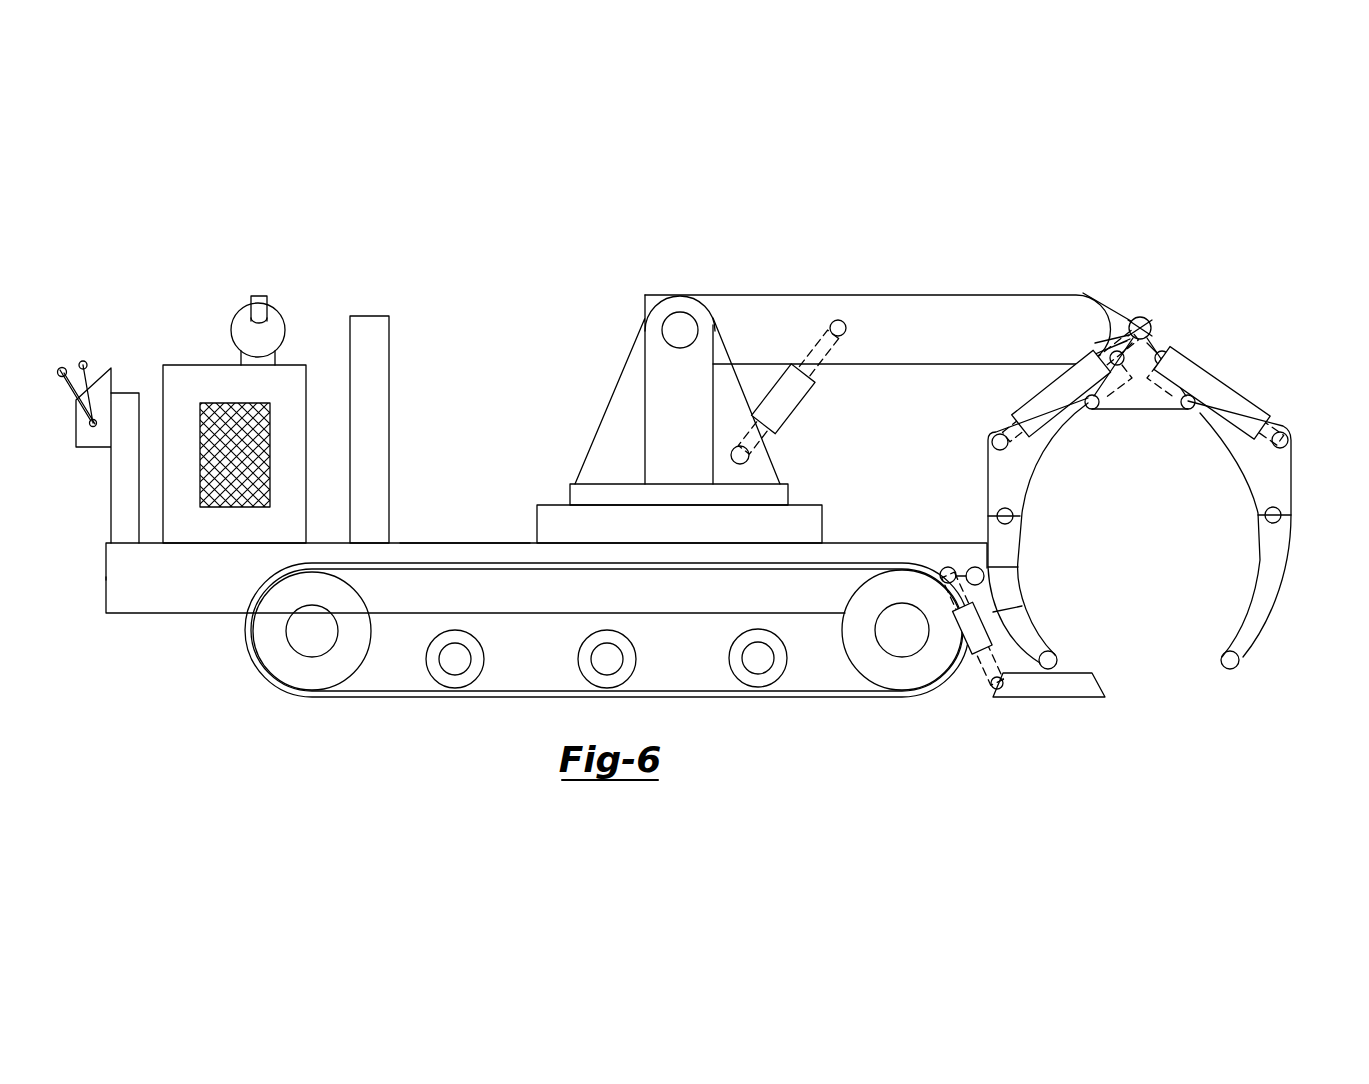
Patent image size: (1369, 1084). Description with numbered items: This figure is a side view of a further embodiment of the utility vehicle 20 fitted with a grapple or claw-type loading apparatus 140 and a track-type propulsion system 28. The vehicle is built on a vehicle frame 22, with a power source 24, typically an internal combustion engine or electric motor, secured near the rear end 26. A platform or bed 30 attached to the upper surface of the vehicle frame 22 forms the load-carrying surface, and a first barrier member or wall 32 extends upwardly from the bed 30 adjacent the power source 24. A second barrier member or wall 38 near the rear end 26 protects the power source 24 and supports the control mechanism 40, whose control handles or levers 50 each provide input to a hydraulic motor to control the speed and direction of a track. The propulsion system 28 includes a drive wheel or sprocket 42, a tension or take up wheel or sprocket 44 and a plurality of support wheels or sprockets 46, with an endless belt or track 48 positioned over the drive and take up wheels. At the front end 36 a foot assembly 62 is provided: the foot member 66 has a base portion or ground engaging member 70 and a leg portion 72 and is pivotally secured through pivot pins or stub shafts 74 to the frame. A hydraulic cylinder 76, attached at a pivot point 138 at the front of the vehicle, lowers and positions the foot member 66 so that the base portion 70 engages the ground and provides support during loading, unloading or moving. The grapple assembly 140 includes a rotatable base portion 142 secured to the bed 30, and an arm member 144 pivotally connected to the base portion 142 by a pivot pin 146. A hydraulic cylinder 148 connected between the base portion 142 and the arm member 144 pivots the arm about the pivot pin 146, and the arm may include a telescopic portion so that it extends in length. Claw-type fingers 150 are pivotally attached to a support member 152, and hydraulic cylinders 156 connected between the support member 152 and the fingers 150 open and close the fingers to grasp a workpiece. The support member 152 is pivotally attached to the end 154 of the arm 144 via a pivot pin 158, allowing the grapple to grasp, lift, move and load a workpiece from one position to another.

The utility vehicle 20 is at (470, 386).
The vehicle frame 22 is at (185, 616).
The power source 24 is at (188, 364).
The rear end 26 is at (106, 577).
The propulsion system 28 is at (605, 669).
The platform or bed 30 is at (458, 543).
The first barrier member or wall 32 is at (367, 330).
The front end 36 is at (1013, 568).
The second barrier member or wall 38 is at (127, 404).
The control mechanism 40 is at (80, 413).
The drive wheel or sprocket 42 is at (280, 663).
The tension or take up wheel or sprocket 44 is at (900, 684).
The support wheels or sprockets 46 is at (477, 655).
The endless belt or track 48 is at (393, 698).
The control handles or levers 50 is at (83, 360).
The foot assembly 62 is at (1009, 633).
The first foot member 66 is at (1066, 670).
The base portion or ground engaging member 70 is at (1052, 690).
The leg portion 72 is at (980, 672).
The pivot pins or stub shafts 74 is at (946, 567).
The hydraulic cylinders 76 is at (1015, 608).
The pivot point 138 is at (975, 567).
The grapple or claw-type loading apparatus 140 is at (818, 360).
The rotatable base portion 142 is at (592, 497).
The arm member 144 is at (854, 305).
The pivot pin 146 is at (682, 330).
The hydraulic cylinder 148 is at (774, 412).
The claw-type fingers 150 is at (1022, 477).
The support member 152 is at (1160, 346).
The end of the arm 154 is at (1128, 308).
The hydraulic cylinders 156 is at (1057, 395).
The pivot pin 158 is at (1150, 320).